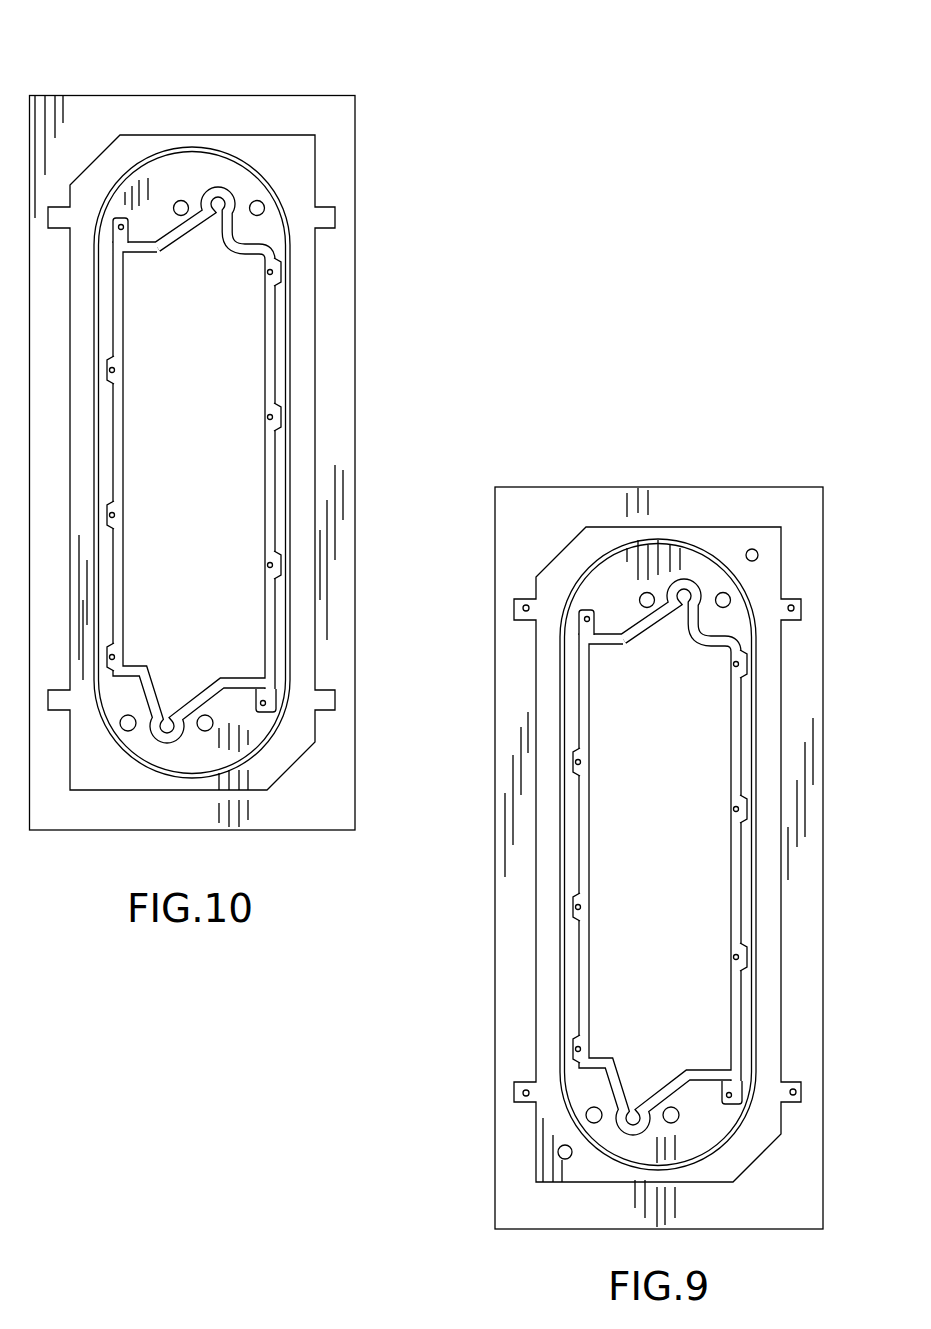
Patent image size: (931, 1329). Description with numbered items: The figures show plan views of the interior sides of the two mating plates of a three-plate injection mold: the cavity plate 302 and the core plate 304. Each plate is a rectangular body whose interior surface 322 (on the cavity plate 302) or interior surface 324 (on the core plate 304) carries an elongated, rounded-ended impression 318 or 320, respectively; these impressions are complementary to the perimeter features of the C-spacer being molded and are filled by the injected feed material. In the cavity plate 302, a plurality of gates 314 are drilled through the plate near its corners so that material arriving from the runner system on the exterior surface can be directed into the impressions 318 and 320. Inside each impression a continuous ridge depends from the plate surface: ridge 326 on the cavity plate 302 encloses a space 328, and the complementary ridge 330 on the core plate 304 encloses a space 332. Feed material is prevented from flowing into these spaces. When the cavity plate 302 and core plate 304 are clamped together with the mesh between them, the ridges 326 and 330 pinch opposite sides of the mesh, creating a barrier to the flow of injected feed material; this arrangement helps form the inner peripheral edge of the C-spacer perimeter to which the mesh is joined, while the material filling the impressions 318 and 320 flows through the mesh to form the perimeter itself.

In FIG. 9, the cavity plate 302 is at (650, 790).
In FIG. 10, the core plate 304 is at (270, 415).
In FIG. 9, the gates 314 is at (803, 607).
In FIG. 9, the impression 318 is at (723, 540).
In FIG. 10, the impression 320 is at (297, 186).
In FIG. 9, the interior surface 322 is at (532, 513).
In FIG. 10, the interior surface 324 is at (340, 128).
In FIG. 9, the continuous ridge 326 is at (636, 620).
In FIG. 9, the space 328 is at (685, 835).
In FIG. 10, the continuous ridge 330 is at (272, 377).
In FIG. 10, the space 332 is at (222, 467).